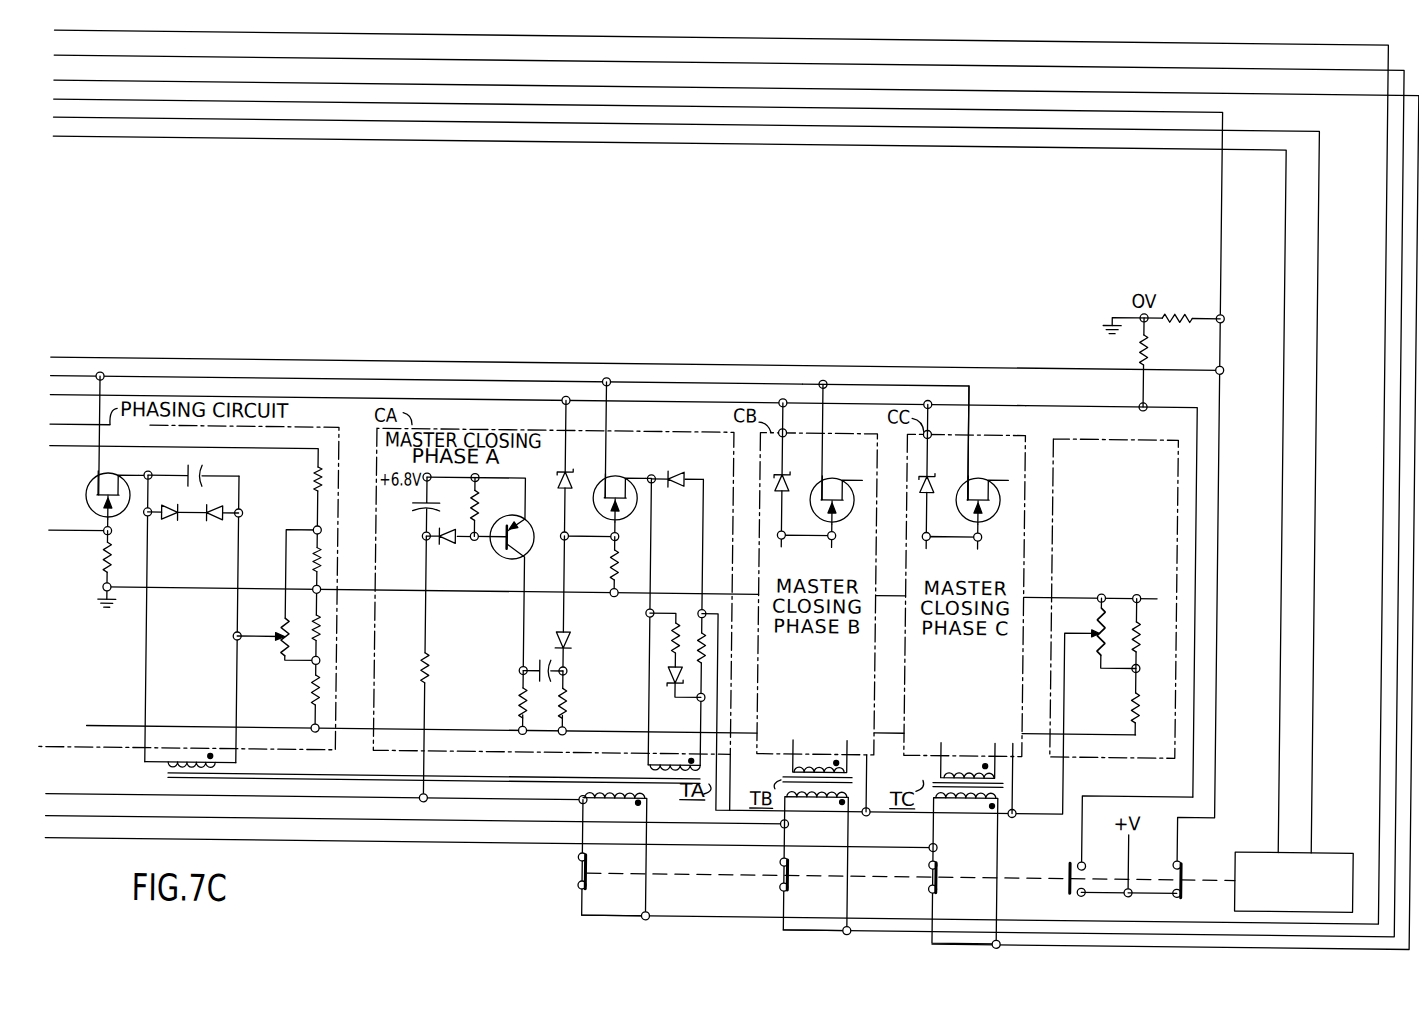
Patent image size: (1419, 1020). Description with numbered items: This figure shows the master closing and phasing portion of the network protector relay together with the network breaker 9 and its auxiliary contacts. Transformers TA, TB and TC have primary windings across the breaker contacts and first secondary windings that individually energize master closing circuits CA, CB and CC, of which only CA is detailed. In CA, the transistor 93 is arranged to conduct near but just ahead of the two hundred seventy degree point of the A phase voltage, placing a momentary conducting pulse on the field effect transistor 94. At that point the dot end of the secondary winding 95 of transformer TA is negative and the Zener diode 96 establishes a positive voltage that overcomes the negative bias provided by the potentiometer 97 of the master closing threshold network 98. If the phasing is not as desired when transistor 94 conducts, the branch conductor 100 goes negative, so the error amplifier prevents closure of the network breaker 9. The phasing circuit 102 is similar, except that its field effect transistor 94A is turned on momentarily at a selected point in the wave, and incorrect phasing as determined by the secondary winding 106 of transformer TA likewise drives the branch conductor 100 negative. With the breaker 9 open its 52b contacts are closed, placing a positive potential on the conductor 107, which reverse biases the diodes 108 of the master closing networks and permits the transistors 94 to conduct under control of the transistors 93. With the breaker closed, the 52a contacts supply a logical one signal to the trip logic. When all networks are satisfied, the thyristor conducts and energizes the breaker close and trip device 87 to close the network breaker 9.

The field effect transistor 94A is at (87, 487).
The phasing circuit 102 is at (301, 421).
The secondary winding 106 is at (169, 763).
The transistor 93 is at (533, 524).
The diode 108 is at (569, 472).
The field effect transistor 94 is at (622, 470).
The Zener diode 96 is at (679, 469).
The secondary winding 95 is at (650, 757).
The branch conductor 100 is at (956, 375).
The conductor 107 is at (1162, 387).
The master closing threshold network 98 is at (1086, 426).
The potentiometer 97 is at (1100, 605).
The network breaker 9 is at (1032, 864).
The 52b contacts 52b is at (1078, 851).
The 52a contacts 52a is at (1181, 850).
The breaker close and trip device 87 is at (1330, 838).